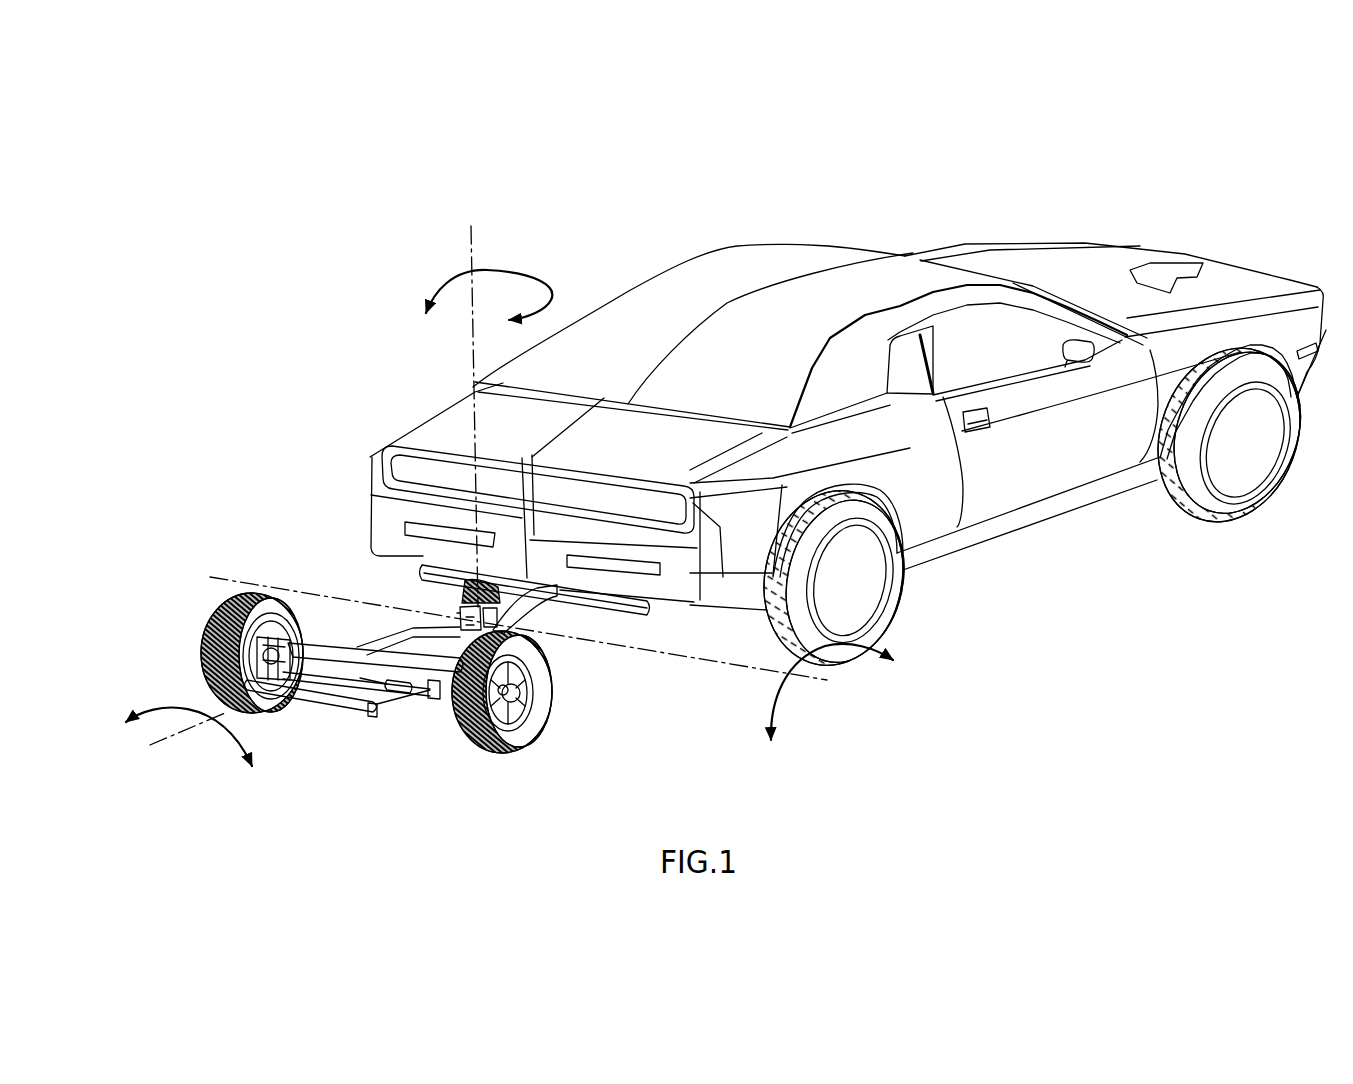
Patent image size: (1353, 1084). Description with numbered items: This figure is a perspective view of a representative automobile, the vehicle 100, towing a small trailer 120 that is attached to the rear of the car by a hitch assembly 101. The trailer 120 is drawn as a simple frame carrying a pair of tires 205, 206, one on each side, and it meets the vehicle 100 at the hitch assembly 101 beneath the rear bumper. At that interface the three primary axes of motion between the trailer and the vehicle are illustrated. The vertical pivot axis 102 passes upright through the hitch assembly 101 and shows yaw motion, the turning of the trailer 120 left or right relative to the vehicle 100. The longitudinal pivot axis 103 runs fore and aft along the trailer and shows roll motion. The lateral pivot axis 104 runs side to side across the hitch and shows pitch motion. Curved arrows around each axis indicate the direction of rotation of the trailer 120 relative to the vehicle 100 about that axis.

The vehicle 100 is at (774, 242).
The hitch assembly 101 is at (455, 604).
The vertical pivot axis 102 is at (462, 358).
The longitudinal pivot axis 103 is at (214, 798).
The lateral pivot axis 104 is at (621, 692).
The trailer 120 is at (335, 638).
The tire 205 is at (201, 645).
The tire 206 is at (513, 758).